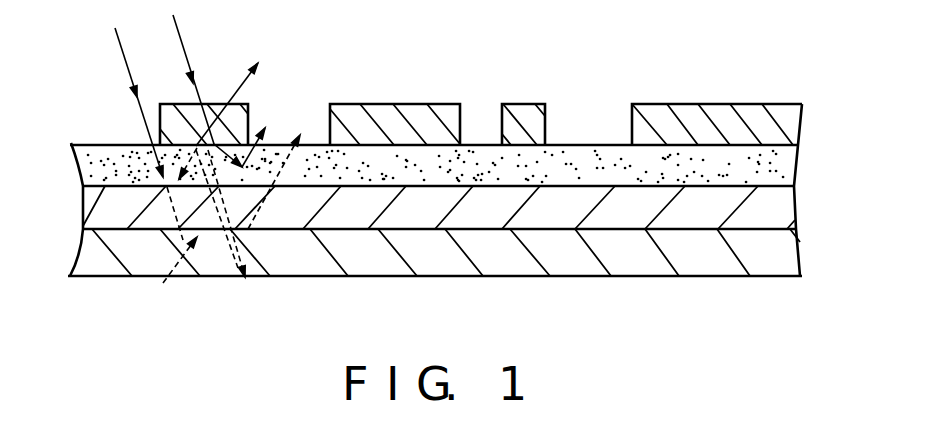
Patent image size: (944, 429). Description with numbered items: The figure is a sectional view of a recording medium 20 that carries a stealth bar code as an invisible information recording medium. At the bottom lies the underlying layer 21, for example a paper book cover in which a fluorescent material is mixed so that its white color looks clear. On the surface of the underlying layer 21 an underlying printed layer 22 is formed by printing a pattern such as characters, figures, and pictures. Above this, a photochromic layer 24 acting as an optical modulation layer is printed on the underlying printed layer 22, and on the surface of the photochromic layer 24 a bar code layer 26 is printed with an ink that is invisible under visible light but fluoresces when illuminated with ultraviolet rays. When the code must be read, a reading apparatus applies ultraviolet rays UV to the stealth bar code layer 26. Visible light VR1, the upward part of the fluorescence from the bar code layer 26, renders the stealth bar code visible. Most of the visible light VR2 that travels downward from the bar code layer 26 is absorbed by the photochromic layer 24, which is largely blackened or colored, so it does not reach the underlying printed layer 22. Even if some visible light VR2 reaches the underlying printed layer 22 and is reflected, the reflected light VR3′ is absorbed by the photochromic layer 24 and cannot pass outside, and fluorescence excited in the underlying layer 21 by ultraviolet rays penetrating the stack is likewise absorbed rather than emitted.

The recording medium 20 is at (108, 139).
The underlying layer 21 is at (793, 257).
The underlying printed layer 22 is at (792, 218).
The photochromic layer 24 is at (789, 175).
The bar code layer 26 is at (794, 127).
The ultraviolet rays UV is at (133, 77).
The visible light VR1 is at (244, 82).
The visible light VR2 is at (238, 235).
The reflected light VR3′ is at (288, 166).